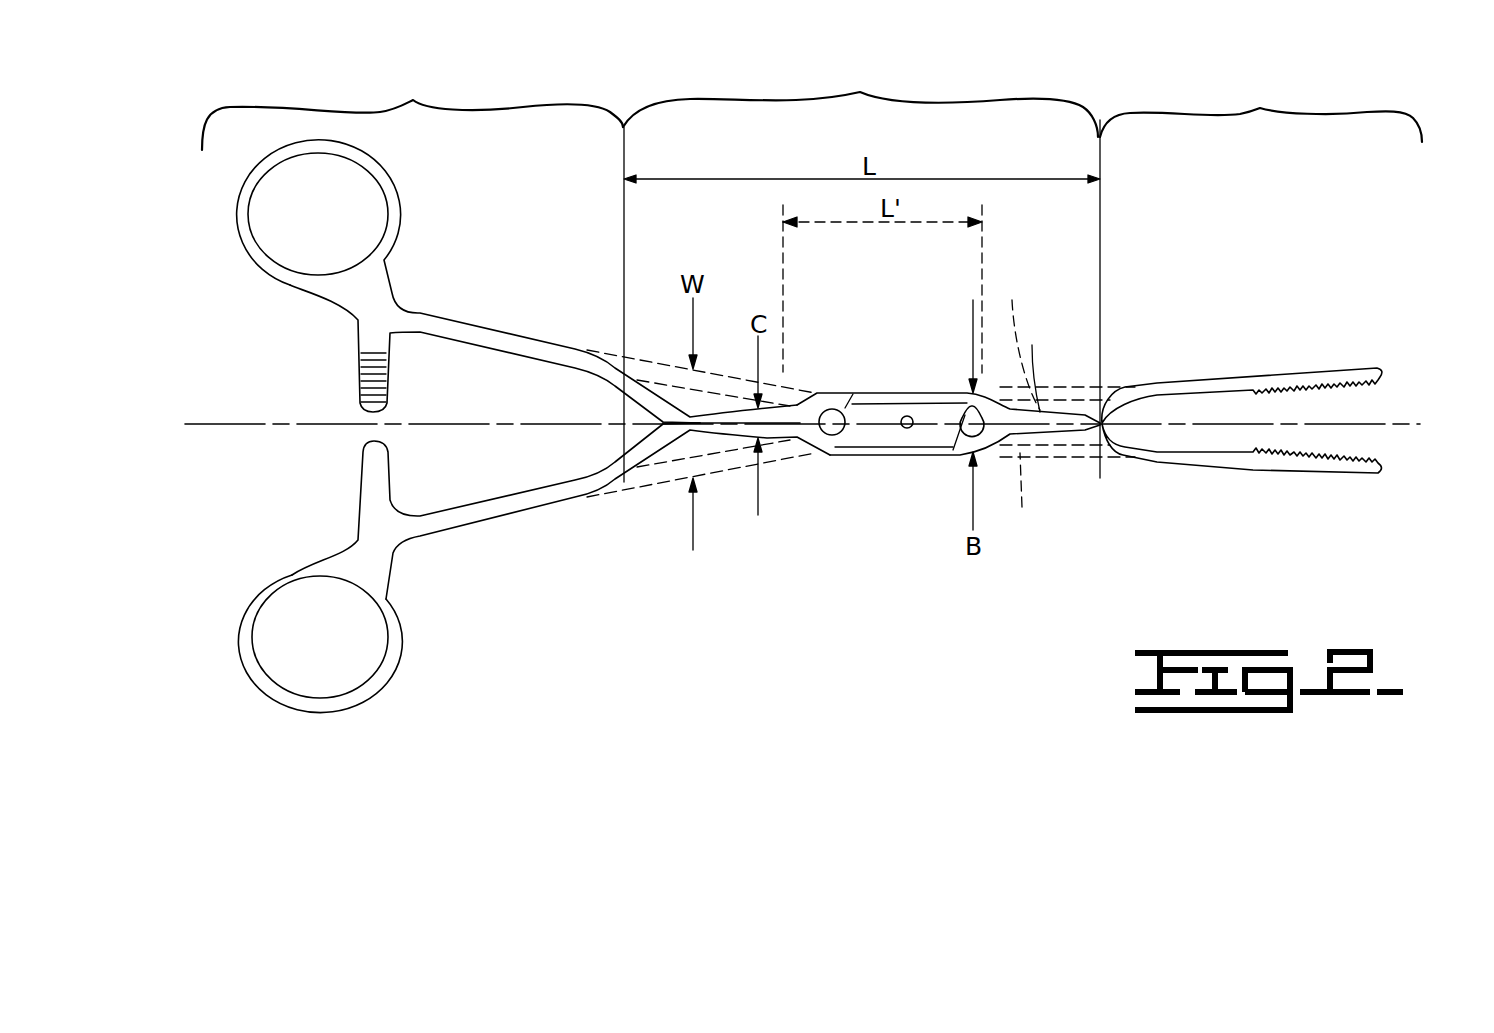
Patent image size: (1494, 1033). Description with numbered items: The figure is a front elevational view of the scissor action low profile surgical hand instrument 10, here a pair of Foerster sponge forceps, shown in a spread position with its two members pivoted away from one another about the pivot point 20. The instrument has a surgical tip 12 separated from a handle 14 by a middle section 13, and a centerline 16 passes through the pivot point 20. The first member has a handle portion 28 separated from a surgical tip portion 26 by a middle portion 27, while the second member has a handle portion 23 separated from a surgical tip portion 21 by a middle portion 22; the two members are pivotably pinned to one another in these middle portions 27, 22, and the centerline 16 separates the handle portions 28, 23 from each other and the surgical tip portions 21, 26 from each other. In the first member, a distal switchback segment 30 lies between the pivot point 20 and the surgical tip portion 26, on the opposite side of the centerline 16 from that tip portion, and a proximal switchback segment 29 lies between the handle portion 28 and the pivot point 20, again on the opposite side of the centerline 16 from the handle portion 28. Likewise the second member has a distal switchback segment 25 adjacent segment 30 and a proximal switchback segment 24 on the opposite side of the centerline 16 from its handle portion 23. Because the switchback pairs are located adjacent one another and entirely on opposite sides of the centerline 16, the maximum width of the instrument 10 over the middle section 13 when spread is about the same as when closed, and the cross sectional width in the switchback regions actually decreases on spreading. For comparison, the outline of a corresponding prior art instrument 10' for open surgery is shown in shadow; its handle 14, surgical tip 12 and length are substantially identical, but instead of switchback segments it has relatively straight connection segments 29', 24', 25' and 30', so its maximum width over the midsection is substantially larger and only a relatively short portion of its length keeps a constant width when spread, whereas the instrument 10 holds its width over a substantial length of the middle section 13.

The surgical hand instrument 10 is at (1209, 333).
The corresponding surgical hand instrument for open surgery 10' is at (1083, 377).
The surgical tip 12 is at (1260, 108).
The middle section 13 is at (860, 92).
The handle 14 is at (413, 100).
The centerline 16 is at (245, 422).
The pivot point 20 is at (907, 416).
The surgical tip portion 21 is at (1233, 375).
The middle portion 22 is at (820, 453).
The handle portion 23 is at (483, 525).
The proximal switchback segment 24 is at (943, 353).
The connection segment 24' is at (696, 506).
The distal switchback segment 25 is at (1031, 460).
The connection segment 25' is at (1049, 331).
The surgical tip portion 26 is at (1233, 467).
The middle portion 27 is at (822, 410).
The handle portion 28 is at (482, 328).
The proximal switchback segment 29 is at (772, 497).
The connection segment 29' is at (680, 337).
The distal switchback segment 30 is at (1063, 349).
The connection segment 30' is at (1053, 500).